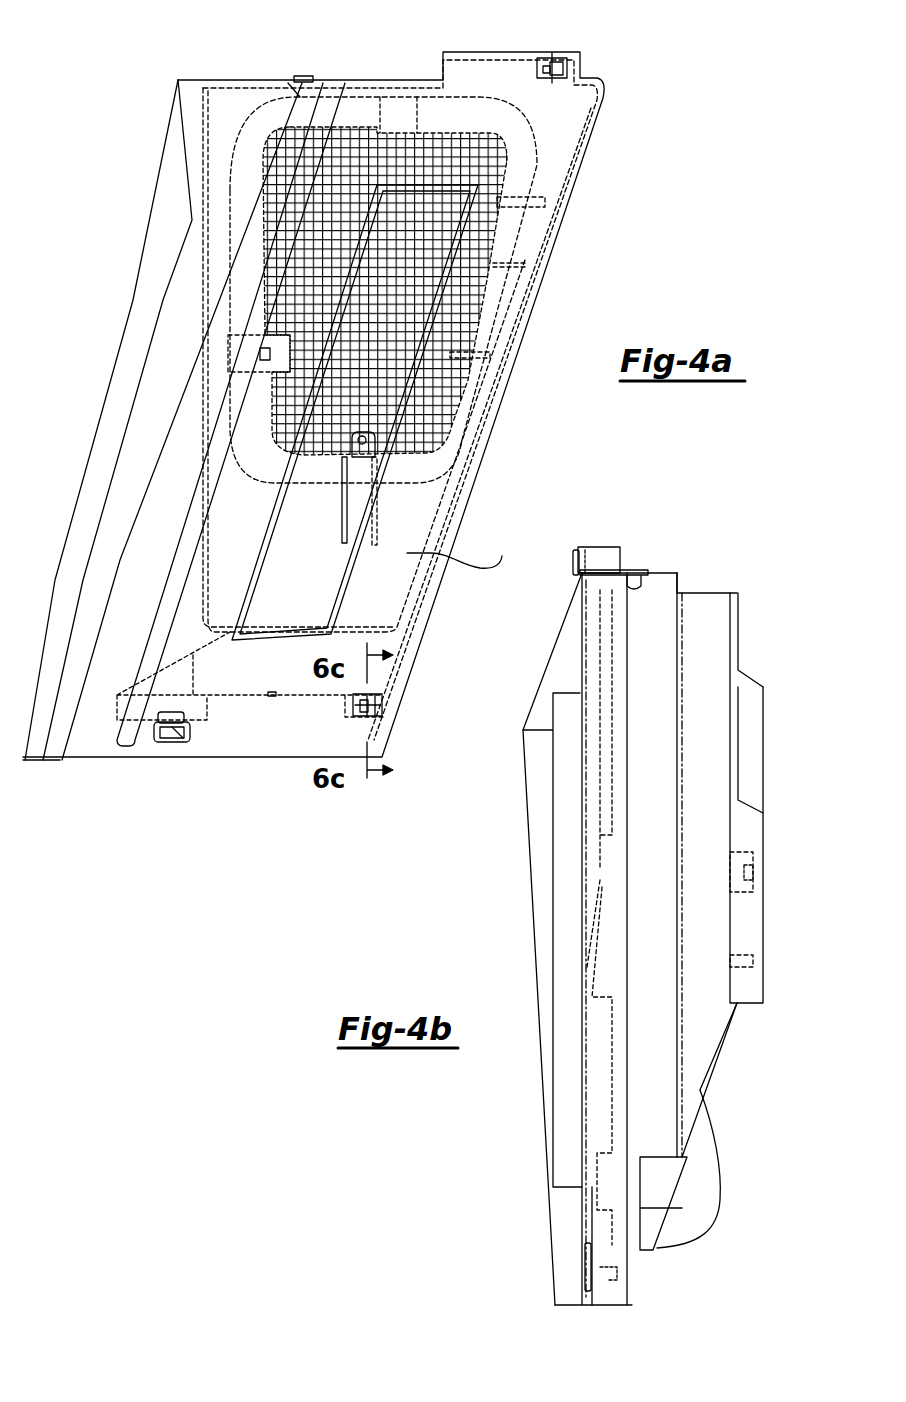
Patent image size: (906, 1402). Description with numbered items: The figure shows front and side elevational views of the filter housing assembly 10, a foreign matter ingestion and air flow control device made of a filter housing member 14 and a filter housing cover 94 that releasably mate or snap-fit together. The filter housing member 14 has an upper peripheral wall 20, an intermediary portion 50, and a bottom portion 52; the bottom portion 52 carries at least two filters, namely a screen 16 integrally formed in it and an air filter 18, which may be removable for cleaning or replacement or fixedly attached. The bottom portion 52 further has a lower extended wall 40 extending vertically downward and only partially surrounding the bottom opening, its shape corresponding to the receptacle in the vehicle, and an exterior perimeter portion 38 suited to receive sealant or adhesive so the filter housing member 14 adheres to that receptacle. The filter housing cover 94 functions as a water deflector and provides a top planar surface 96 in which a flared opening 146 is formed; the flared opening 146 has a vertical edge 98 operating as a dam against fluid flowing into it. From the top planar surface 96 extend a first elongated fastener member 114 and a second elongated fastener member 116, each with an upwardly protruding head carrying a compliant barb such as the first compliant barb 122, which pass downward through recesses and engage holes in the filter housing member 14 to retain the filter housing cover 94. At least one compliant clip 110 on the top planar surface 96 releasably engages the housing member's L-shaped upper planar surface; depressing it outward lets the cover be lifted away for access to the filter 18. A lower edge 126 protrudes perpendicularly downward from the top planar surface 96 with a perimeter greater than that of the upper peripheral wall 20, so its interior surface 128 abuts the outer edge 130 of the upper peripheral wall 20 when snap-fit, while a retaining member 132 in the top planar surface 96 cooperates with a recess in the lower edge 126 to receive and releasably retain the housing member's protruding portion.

In FIG. 4A, the filter housing assembly 10 is at (140, 145).
In FIG. 4B, the filter housing assembly 10 is at (718, 565).
In FIG. 4B, the filter housing member 14 is at (780, 775).
In FIG. 4A, the screen 16 is at (337, 60).
In FIG. 4B, the filter 18 is at (680, 643).
In FIG. 4B, the upper peripheral wall 20 is at (650, 897).
In FIG. 4B, the exterior perimeter portion 38 is at (755, 1007).
In FIG. 4B, the lower extended wall 40 is at (752, 704).
In FIG. 4B, the intermediary portion 50 is at (708, 1000).
In FIG. 4B, the bottom portion 52 is at (768, 837).
In FIG. 4A, the filter housing cover 94 is at (110, 775).
In FIG. 4B, the filter housing cover 94 is at (517, 878).
In FIG. 4A, the top planar surface 96 is at (462, 549).
In FIG. 4B, the top planar surface 96 is at (580, 657).
In FIG. 4B, the vertical edge 98 is at (565, 1157).
In FIG. 4A, the compliant clip 110 is at (180, 742).
In FIG. 4B, the compliant clip 110 is at (632, 1270).
In FIG. 4A, the first elongated fastener member 114 is at (557, 71).
In FIG. 4A, the second elongated fastener member 116 is at (383, 703).
In FIG. 4A, the first compliant barb 122 is at (300, 79).
In FIG. 4B, the lower edge 126 is at (612, 1305).
In FIG. 4B, the interior surface 128 is at (640, 570).
In FIG. 4B, the outer edge 130 is at (674, 574).
In FIG. 4A, the retaining member 132 is at (298, 77).
In FIG. 4A, the flared opening 146 is at (320, 576).